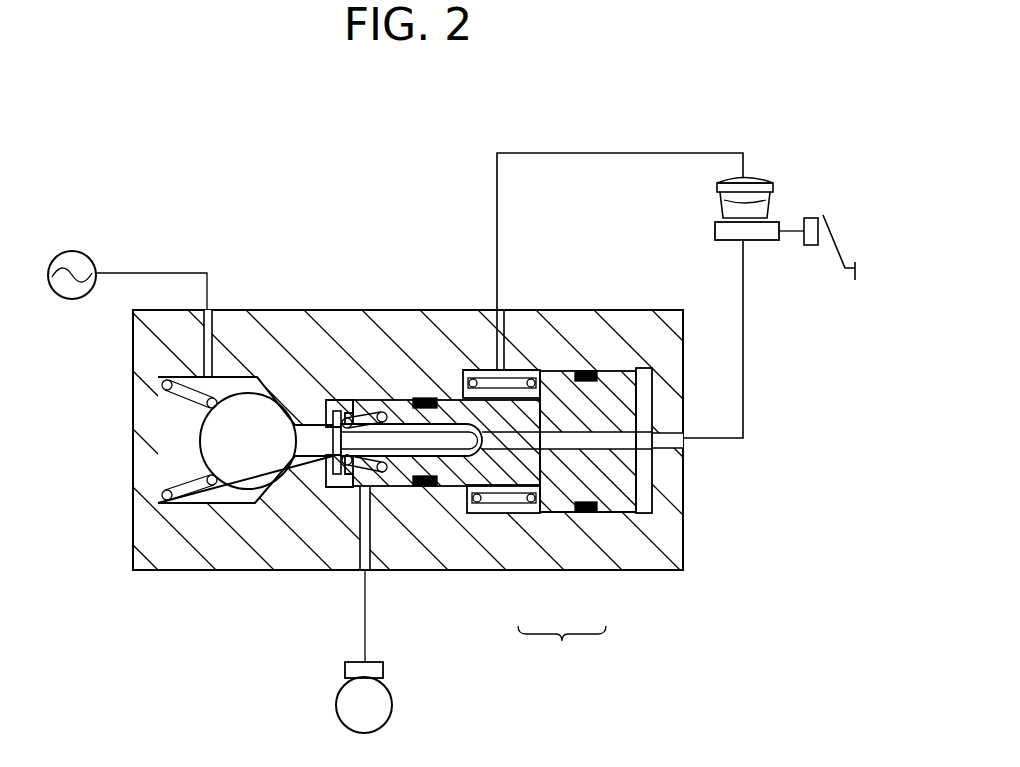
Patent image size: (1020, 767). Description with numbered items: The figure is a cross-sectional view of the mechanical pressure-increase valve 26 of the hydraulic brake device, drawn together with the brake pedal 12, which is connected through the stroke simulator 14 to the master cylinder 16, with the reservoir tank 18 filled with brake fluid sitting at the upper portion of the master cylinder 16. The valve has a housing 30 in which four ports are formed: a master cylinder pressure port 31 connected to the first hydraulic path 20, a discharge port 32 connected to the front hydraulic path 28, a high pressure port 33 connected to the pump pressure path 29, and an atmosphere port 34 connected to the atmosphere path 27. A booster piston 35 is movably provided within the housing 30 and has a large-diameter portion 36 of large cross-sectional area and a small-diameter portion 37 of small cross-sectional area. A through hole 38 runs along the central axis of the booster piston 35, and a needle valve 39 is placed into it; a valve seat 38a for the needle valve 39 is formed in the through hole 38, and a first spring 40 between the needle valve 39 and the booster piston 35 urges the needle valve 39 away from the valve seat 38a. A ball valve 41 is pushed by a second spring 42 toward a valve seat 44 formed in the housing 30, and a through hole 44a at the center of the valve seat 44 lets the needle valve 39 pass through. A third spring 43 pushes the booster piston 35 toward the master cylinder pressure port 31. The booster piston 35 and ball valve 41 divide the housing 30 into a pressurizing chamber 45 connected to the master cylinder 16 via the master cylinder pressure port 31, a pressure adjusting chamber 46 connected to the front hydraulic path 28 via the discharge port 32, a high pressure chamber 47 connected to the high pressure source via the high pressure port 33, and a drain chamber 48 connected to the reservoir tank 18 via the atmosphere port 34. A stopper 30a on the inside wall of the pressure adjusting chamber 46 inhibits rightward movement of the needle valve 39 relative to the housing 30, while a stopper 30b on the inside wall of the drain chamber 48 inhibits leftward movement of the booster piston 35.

The brake pedal 12 is at (857, 275).
The stroke simulator 14 is at (814, 218).
The master cylinder 16 is at (760, 243).
The reservoir tank 18 is at (773, 183).
The first hydraulic path 20 is at (744, 354).
The mechanical pressure-increase valve 26 is at (141, 587).
The atmosphere path 27 is at (499, 257).
The front hydraulic path 28 is at (368, 641).
The pump pressure path 29 is at (210, 283).
The housing 30 is at (663, 568).
The stopper 30a is at (358, 490).
The stopper 30b is at (526, 372).
The master cylinder pressure port 31 is at (674, 444).
The discharge port 32 is at (358, 553).
The high pressure port 33 is at (241, 322).
The atmosphere port 34 is at (493, 337).
The booster piston 35 is at (562, 651).
The large-diameter portion 36 is at (562, 513).
The small-diameter portion 37 is at (555, 496).
The through hole 38 is at (630, 498).
The valve seat 38a is at (483, 513).
The needle valve 39 is at (402, 440).
The first spring 40 is at (363, 396).
The ball valve 41 is at (215, 443).
The second spring 42 is at (175, 392).
The third spring 43 is at (508, 373).
The valve seat 44 is at (260, 505).
The through hole 44a is at (318, 458).
The pressurizing chamber 45 is at (640, 400).
The pressure adjusting chamber 46 is at (370, 488).
The high pressure chamber 47 is at (172, 473).
The drain chamber 48 is at (573, 372).